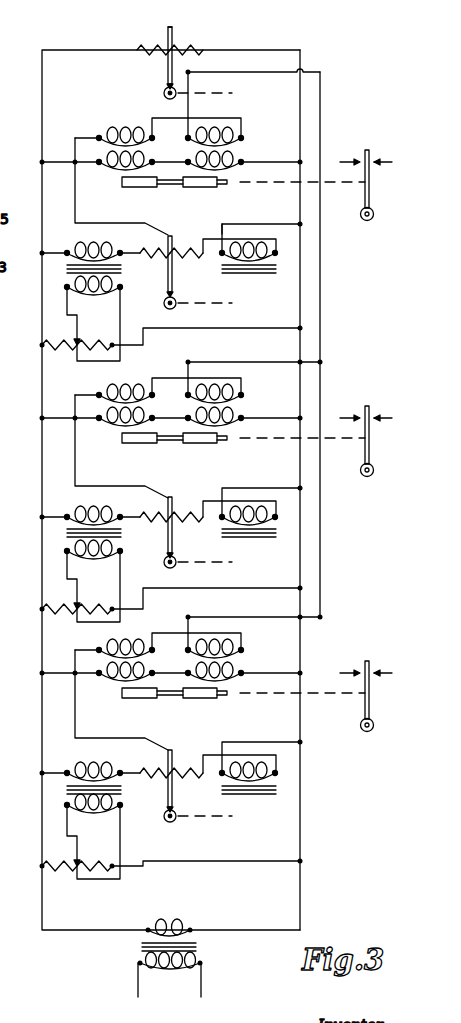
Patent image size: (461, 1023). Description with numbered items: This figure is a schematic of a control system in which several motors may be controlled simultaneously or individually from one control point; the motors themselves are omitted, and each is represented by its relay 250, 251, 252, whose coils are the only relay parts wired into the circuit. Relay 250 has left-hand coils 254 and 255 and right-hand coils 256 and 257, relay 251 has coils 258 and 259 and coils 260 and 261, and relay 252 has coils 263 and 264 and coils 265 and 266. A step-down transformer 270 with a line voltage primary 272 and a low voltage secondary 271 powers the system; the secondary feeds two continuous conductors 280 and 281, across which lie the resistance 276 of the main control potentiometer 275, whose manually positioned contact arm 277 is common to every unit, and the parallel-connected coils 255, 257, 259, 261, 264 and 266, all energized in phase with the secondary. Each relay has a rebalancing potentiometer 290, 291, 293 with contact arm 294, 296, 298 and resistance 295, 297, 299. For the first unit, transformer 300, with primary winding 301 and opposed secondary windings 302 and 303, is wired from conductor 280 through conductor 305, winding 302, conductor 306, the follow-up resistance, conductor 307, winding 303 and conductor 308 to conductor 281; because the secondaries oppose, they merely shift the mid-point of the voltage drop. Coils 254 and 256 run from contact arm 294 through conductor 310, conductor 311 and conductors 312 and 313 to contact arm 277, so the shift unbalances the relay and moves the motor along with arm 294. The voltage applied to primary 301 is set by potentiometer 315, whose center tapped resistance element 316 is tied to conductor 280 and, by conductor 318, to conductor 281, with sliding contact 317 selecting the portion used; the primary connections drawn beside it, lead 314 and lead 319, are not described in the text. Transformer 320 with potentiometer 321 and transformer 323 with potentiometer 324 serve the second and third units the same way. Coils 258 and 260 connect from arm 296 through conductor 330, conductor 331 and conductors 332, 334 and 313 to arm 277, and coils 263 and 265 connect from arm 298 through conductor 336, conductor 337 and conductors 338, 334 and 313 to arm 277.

The relay 250 is at (265, 150).
The relay 251 is at (254, 410).
The relay 252 is at (251, 665).
The relay coil 254 is at (130, 133).
The relay coil 255 is at (108, 169).
The relay coil 256 is at (213, 140).
The relay coil 257 is at (234, 170).
The relay coil 258 is at (128, 392).
The relay coil 259 is at (110, 432).
The relay coil 260 is at (210, 395).
The relay coil 261 is at (232, 427).
The relay coil 263 is at (126, 649).
The relay coil 264 is at (109, 687).
The relay coil 265 is at (216, 650).
The relay coil 266 is at (236, 688).
The step-down transformer 270 is at (125, 945).
The low voltage secondary 271 is at (178, 928).
The line voltage primary 272 is at (202, 963).
The main control potentiometer 275 is at (187, 34).
The resistance 276 is at (151, 45).
The contact arm 277 is at (166, 63).
The conductor 280 is at (42, 118).
The conductor 281 is at (320, 126).
The rebalancing potentiometer 290 is at (181, 269).
The rebalancing potentiometer 291 is at (180, 532).
The rebalancing potentiometer 293 is at (180, 786).
The contact arm 294 is at (168, 264).
The resistance 295 is at (183, 246).
The contact arm 296 is at (167, 526).
The resistance 297 is at (179, 506).
The contact arm 298 is at (167, 784).
The resistance 299 is at (181, 756).
The transformer 300 is at (60, 265).
The primary winding 301 is at (94, 296).
The secondary winding 302 is at (104, 251).
The secondary winding 303 is at (253, 270).
The conductor 305 is at (55, 246).
The conductor 306 is at (135, 243).
The conductor 307 is at (259, 239).
The conductor 308 is at (292, 224).
The conductor 310 is at (121, 224).
The conductor 311 is at (170, 109).
The conductor 312 is at (198, 86).
The conductor 313 is at (188, 72).
The conductor 314 is at (75, 320).
The potentiometer 315 is at (67, 355).
The center tapped resistance element 316 is at (42, 338).
The sliding contact 317 is at (83, 341).
The conductor 318 is at (209, 328).
The conductor 319 is at (121, 313).
The transformer 320 is at (58, 530).
The potentiometer 321 is at (90, 595).
The transformer 323 is at (52, 787).
The potentiometer 324 is at (106, 825).
The conductor 330 is at (121, 486).
The conductor 331 is at (171, 375).
The conductor 332 is at (252, 362).
The conductor 334 is at (320, 318).
The conductor 336 is at (133, 738).
The conductor 337 is at (167, 632).
The conductor 338 is at (256, 618).